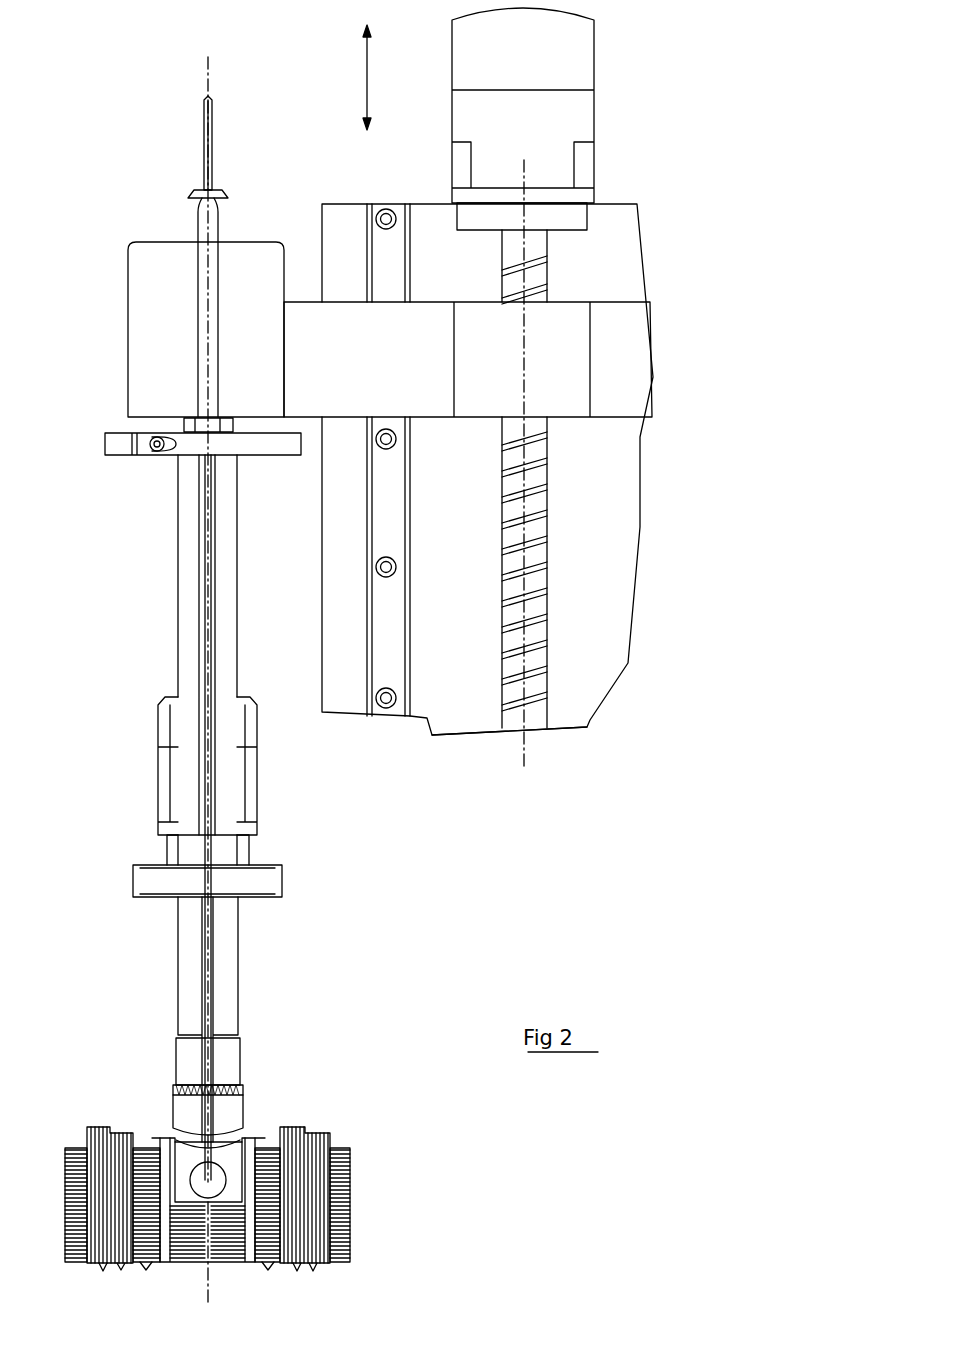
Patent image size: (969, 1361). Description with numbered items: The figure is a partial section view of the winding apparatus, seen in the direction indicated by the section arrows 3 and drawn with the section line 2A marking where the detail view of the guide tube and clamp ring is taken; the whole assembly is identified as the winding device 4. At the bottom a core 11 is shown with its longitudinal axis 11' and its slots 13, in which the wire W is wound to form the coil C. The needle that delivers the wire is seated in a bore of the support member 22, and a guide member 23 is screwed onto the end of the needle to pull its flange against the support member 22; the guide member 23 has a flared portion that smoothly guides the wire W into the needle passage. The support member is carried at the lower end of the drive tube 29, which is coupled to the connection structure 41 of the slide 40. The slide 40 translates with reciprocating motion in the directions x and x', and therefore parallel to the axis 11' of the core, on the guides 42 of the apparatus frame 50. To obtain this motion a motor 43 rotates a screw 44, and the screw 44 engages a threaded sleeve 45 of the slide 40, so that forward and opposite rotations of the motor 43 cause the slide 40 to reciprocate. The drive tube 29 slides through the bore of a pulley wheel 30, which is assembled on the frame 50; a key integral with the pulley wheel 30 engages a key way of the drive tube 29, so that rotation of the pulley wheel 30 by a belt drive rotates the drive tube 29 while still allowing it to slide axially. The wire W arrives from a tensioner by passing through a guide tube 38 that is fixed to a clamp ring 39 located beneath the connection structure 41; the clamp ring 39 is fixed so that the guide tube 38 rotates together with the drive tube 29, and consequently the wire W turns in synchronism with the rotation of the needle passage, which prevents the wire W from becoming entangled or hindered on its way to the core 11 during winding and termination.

The section line 2A is at (204, 125).
The wire feed probe / axis 3 is at (204, 659).
The wire feeding device 4 is at (320, 1052).
The core 11 is at (235, 1209).
The longitudinal axis of core 11' is at (248, 1256).
The slots 13 is at (332, 1262).
The support member 22 is at (185, 1153).
The guide member 23 is at (215, 1175).
The drive tube 29 is at (183, 928).
The pulley wheel 30 is at (263, 864).
The guide tube 38 is at (197, 325).
The clamp ring 39 is at (108, 446).
The slide 40 is at (349, 404).
The connection structure 41 is at (238, 262).
The guides 42 is at (387, 640).
The motor 43 is at (577, 43).
The screw 44 is at (540, 586).
The threaded sleeve 45 is at (557, 325).
The apparatus frame 50 is at (458, 716).
The coil C is at (318, 1125).
The wire W is at (208, 975).
The direction X x is at (377, 129).
The direction X' x' is at (380, 71).